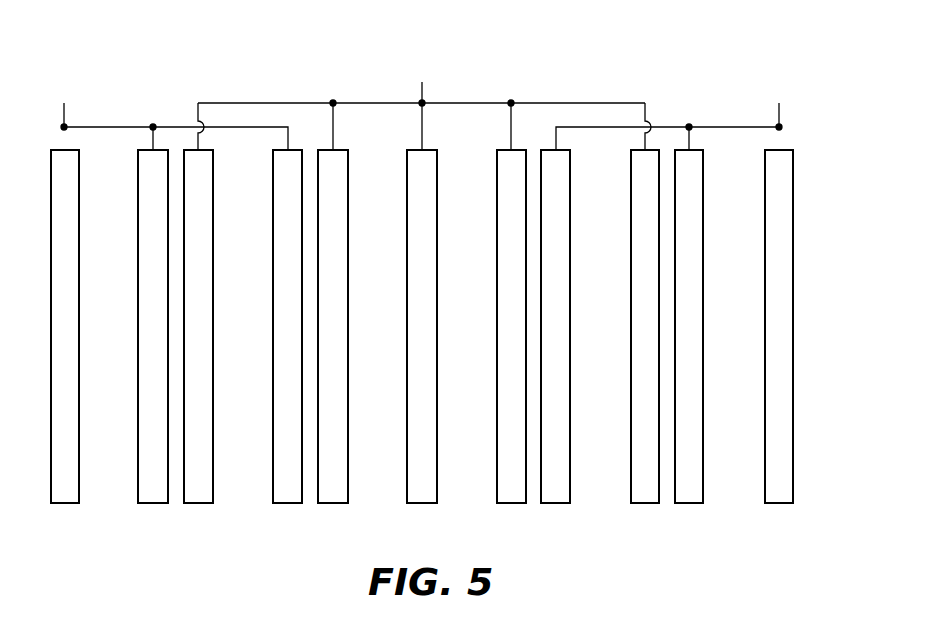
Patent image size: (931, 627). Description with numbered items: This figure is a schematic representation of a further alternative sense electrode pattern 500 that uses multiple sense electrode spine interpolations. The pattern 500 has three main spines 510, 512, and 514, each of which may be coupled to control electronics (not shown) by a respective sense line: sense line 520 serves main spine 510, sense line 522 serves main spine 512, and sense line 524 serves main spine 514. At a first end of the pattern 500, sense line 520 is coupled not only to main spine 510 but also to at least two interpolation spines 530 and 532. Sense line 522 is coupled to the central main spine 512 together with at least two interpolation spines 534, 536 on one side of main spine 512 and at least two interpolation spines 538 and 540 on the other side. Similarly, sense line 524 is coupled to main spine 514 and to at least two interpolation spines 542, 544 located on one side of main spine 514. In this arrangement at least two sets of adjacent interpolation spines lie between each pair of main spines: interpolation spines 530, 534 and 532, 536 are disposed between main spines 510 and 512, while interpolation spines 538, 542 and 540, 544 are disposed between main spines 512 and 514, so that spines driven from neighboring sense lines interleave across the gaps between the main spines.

The sense electrode pattern 500 is at (735, 43).
The main spine 510 is at (80, 291).
The main spine 512 is at (438, 291).
The main spine 514 is at (794, 291).
The sense line 520 is at (66, 125).
The sense line 522 is at (424, 101).
The sense line 524 is at (777, 125).
The interpolation spine 530 is at (137, 326).
The interpolation spine 532 is at (272, 326).
The interpolation spine 534 is at (214, 291).
The interpolation spine 536 is at (349, 291).
The interpolation spine 538 is at (496, 326).
The interpolation spine 540 is at (630, 326).
The interpolation spine 542 is at (571, 291).
The interpolation spine 544 is at (704, 326).